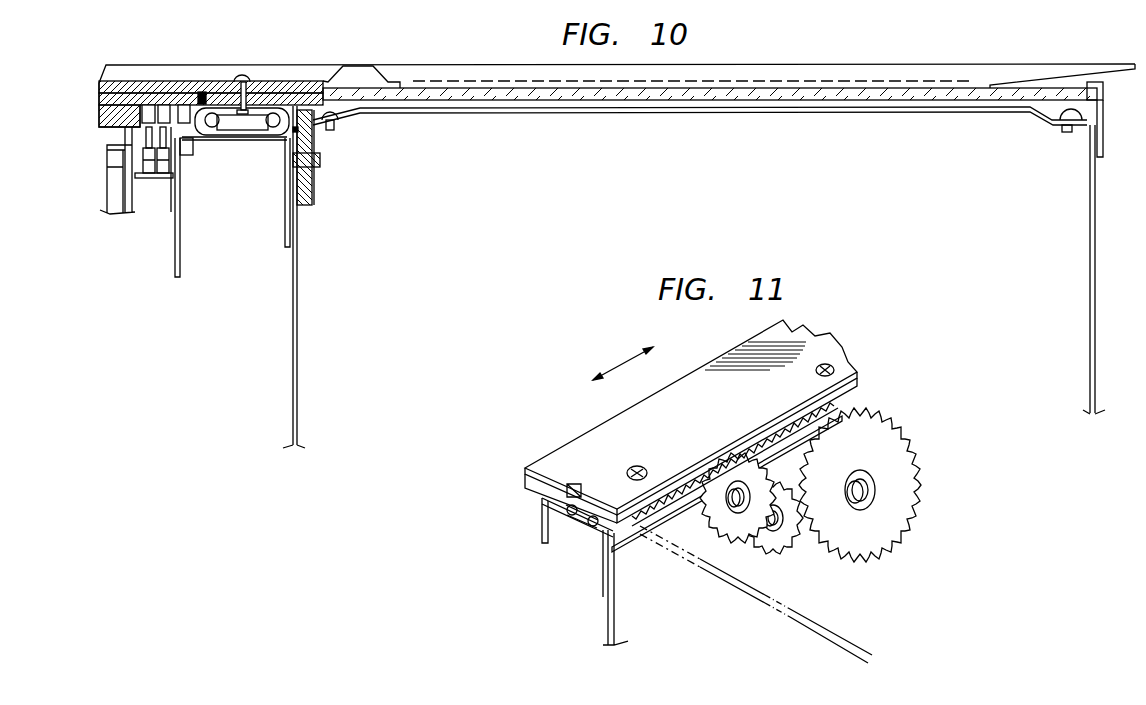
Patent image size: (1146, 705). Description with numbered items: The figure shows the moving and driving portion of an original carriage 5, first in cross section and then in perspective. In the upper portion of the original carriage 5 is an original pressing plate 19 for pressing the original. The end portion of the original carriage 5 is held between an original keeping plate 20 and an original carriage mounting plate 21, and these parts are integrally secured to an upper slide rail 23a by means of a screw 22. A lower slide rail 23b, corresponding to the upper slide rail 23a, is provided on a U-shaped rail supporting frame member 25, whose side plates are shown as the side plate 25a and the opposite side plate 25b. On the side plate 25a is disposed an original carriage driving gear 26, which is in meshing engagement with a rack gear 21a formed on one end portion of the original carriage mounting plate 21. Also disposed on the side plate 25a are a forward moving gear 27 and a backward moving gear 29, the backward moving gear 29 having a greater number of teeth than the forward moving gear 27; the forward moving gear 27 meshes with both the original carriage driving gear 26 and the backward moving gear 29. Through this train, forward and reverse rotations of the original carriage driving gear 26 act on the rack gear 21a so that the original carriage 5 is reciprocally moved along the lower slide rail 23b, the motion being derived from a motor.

In FIG. 10, the original carriage 5 is at (953, 96).
In FIG. 11, the original carriage 5 is at (832, 604).
In FIG. 10, the original pressing plate 19 is at (858, 72).
In FIG. 10, the original keeping plate 20 is at (128, 84).
In FIG. 11, the original keeping plate 20 is at (693, 395).
In FIG. 10, the original carriage mounting plate 21 is at (203, 94).
In FIG. 11, the original carriage mounting plate 21 is at (540, 480).
In FIG. 10, the rack gear 21a is at (314, 131).
In FIG. 11, the rack gear 21a is at (673, 541).
In FIG. 10, the screw 22 is at (248, 77).
In FIG. 11, the screw 22 is at (640, 466).
In FIG. 10, the upper slide rail 23a is at (207, 108).
In FIG. 11, the upper slide rail 23a is at (585, 497).
In FIG. 10, the lower slide rail 23b is at (253, 131).
In FIG. 11, the lower slide rail 23b is at (584, 512).
In FIG. 10, the rail supporting frame member 25 is at (222, 140).
In FIG. 11, the rail supporting frame member 25 is at (561, 522).
In FIG. 10, the side plate 25a is at (286, 220).
In FIG. 11, the side plate 25a is at (604, 583).
In FIG. 10, the bracket leg 25b is at (181, 258).
In FIG. 11, the bracket leg 25b is at (541, 524).
In FIG. 10, the original carriage driving gear 26 is at (311, 188).
In FIG. 11, the original carriage driving gear 26 is at (742, 475).
In FIG. 11, the forward moving gear 27 is at (768, 541).
In FIG. 11, the backward moving gear 29 is at (848, 535).